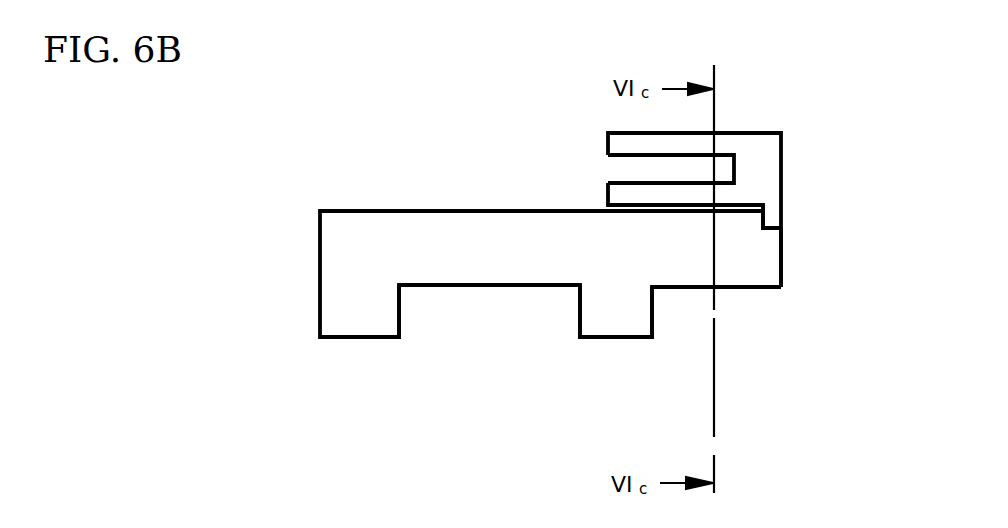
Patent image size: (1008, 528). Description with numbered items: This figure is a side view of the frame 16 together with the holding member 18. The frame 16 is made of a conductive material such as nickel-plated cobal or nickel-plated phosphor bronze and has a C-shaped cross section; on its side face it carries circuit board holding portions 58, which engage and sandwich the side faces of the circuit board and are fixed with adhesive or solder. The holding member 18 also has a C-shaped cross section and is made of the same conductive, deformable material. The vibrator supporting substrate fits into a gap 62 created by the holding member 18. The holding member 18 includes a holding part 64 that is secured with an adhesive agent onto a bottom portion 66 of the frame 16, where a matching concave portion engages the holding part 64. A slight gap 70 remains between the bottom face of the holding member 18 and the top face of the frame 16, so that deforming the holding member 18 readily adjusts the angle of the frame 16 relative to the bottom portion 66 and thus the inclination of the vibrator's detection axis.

The frame 16 is at (388, 208).
The holding member 18 is at (773, 131).
The circuit board holding portions 58 is at (372, 338).
The gap 62 is at (617, 172).
The holding part 64 is at (787, 215).
The bottom portion 66 is at (787, 262).
The gap 70 is at (605, 205).